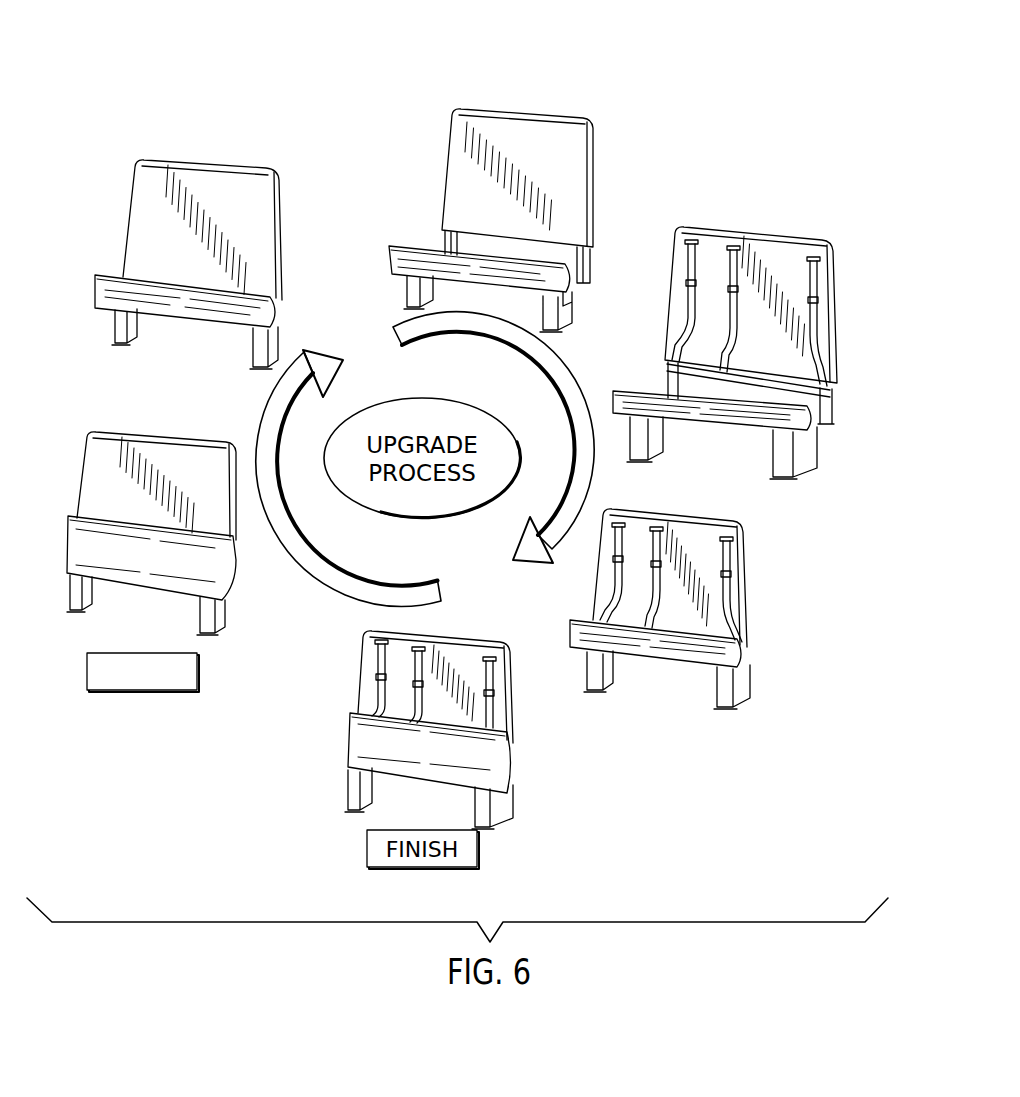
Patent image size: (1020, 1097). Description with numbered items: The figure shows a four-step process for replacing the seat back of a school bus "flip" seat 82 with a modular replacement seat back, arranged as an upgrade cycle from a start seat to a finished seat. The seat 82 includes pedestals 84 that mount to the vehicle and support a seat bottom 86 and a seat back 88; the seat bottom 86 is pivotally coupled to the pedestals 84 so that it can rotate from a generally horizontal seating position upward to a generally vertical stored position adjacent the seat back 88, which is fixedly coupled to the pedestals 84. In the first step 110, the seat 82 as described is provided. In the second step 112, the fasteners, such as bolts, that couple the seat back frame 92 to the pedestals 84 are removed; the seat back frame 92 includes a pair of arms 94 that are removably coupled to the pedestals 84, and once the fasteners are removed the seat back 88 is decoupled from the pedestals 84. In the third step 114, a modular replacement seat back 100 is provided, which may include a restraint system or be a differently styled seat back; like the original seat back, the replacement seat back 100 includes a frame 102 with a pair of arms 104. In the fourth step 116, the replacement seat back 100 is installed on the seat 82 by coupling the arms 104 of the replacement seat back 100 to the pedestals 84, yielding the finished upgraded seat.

The seat 82 is at (75, 455).
The pedestals 84 is at (273, 338).
The seat bottom 86 is at (200, 322).
The seat back 88 is at (207, 163).
The seat back frame 92 is at (593, 250).
The arms 94 is at (447, 240).
The replacement seat back 100 is at (723, 230).
The frame 102 is at (823, 392).
The arms 104 is at (667, 377).
The first step 110 is at (103, 144).
The second step 112 is at (535, 95).
The third step 114 is at (778, 208).
The fourth step 116 is at (779, 722).